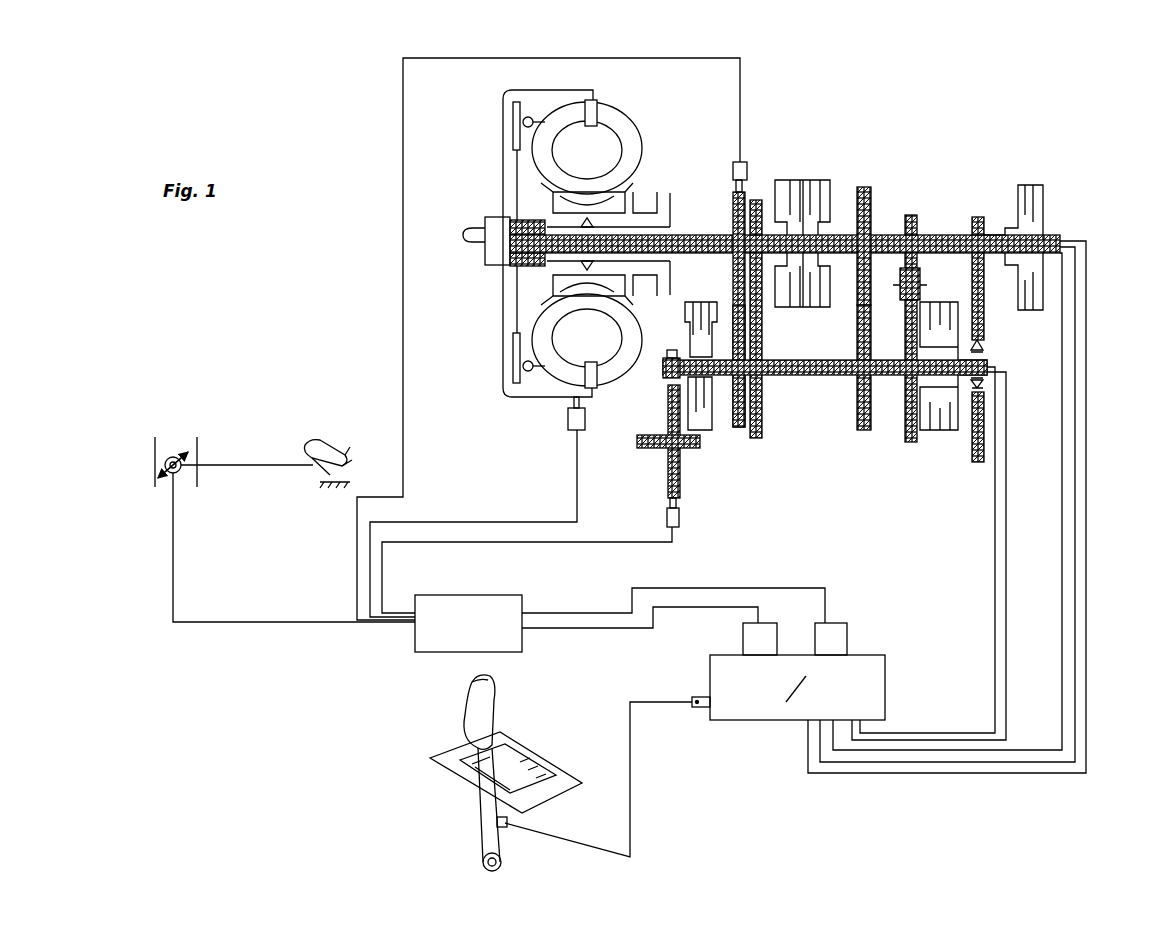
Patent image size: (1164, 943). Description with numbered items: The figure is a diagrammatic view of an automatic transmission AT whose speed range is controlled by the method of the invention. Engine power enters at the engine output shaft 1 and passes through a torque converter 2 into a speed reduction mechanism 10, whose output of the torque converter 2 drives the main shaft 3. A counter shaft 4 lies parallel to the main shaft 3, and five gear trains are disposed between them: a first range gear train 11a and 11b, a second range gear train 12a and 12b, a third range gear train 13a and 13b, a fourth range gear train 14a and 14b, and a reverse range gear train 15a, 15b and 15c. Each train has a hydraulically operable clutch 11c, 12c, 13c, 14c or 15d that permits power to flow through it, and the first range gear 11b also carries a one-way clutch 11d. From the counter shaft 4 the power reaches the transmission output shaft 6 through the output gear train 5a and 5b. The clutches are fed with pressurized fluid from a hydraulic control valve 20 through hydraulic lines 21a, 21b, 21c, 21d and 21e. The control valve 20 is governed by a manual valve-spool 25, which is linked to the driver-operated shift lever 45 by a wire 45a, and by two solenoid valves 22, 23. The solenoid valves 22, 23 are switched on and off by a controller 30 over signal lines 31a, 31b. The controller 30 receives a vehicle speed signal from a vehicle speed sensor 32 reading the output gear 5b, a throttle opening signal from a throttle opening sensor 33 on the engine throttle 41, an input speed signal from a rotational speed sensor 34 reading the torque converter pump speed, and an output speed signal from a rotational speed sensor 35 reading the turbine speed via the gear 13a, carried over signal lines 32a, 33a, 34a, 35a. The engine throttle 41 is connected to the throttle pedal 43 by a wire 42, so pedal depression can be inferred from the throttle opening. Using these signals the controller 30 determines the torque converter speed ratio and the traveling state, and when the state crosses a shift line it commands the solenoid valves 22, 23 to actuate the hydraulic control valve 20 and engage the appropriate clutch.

The transmission AT is at (972, 92).
The engine output shaft 1 is at (465, 246).
The torque converter 2 is at (624, 104).
The main shaft 3 is at (690, 236).
The counter shaft 4 is at (812, 377).
The output gear 5a is at (665, 378).
The output gear 5b is at (668, 405).
The transmission output shaft 6 is at (640, 448).
The speed reduction mechanism 10 is at (817, 158).
The first range gear 11a is at (977, 215).
The first range gear 11b is at (984, 320).
The hydraulic clutch 11c is at (1030, 185).
The one-way clutch 11d is at (990, 368).
The second range gear 12a is at (758, 200).
The second range gear 12b is at (762, 425).
The hydraulic clutch 12c is at (780, 308).
The third range gear 13a is at (733, 200).
The third range gear 13b is at (740, 430).
The hydraulic clutch 13c is at (712, 432).
The fourth range gear 14a is at (872, 195).
The fourth range gear 14b is at (860, 435).
The hydraulic clutch 14c is at (832, 190).
The reverse range gear 15a is at (912, 220).
The reverse range gear 15b is at (922, 285).
The reverse range gear 15c is at (905, 442).
The hydraulic clutch 15d is at (945, 432).
The hydraulic control valve 20 is at (886, 679).
The hydraulic line 21a is at (920, 733).
The hydraulic line 21b is at (1006, 720).
The hydraulic line 21c is at (1062, 658).
The hydraulic line 21d is at (1076, 636).
The hydraulic line 21e is at (1087, 682).
The solenoid valve 22 is at (772, 623).
The solenoid valve 23 is at (846, 623).
The manual valve-spool 25 is at (700, 708).
The controller 30 is at (490, 595).
The signal line 31a is at (570, 613).
The signal line 31b is at (566, 628).
The vehicle speed sensor 32 is at (680, 518).
The signal line 32a is at (586, 542).
The throttle opening sensor 33 is at (165, 475).
The signal line 33a is at (176, 565).
The rotational speed sensor 34 is at (568, 420).
The signal line 34a is at (472, 522).
The rotational speed sensor 35 is at (745, 162).
The signal line 35a is at (404, 415).
The engine throttle 41 is at (183, 455).
The wire 42 is at (232, 467).
The throttle pedal 43 is at (300, 455).
The shift lever 45 is at (495, 722).
The wire 45a is at (632, 740).